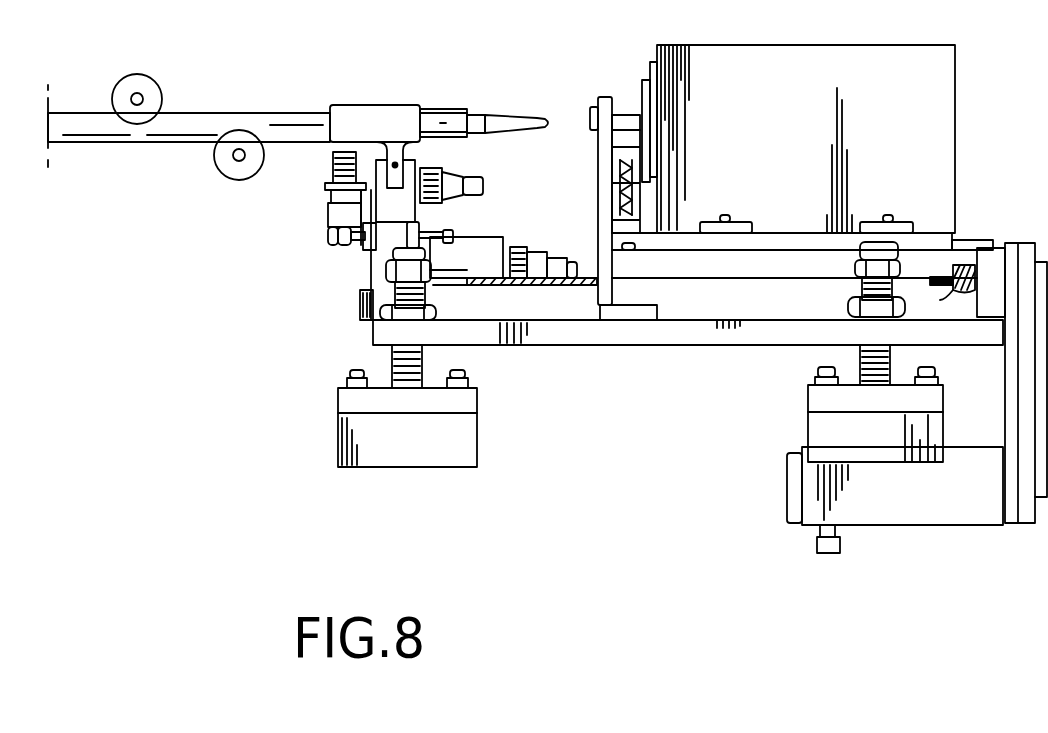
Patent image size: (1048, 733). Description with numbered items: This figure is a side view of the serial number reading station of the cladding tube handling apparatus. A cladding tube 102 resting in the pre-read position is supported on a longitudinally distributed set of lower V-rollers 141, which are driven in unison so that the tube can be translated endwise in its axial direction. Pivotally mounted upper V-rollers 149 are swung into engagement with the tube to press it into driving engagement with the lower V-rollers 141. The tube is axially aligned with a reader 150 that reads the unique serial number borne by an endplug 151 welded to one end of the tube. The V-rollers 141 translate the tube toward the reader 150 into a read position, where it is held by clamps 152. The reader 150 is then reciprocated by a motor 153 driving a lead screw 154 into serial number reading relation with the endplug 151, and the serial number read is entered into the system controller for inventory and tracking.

The cladding tube 102 is at (220, 118).
The V-rollers 141 is at (240, 170).
The upper V-rollers 149 is at (143, 76).
The reader 150 is at (943, 80).
The endplug 151 is at (505, 120).
The clamps 152 is at (377, 112).
The motor 153 is at (940, 505).
The lead screw 154 is at (953, 270).